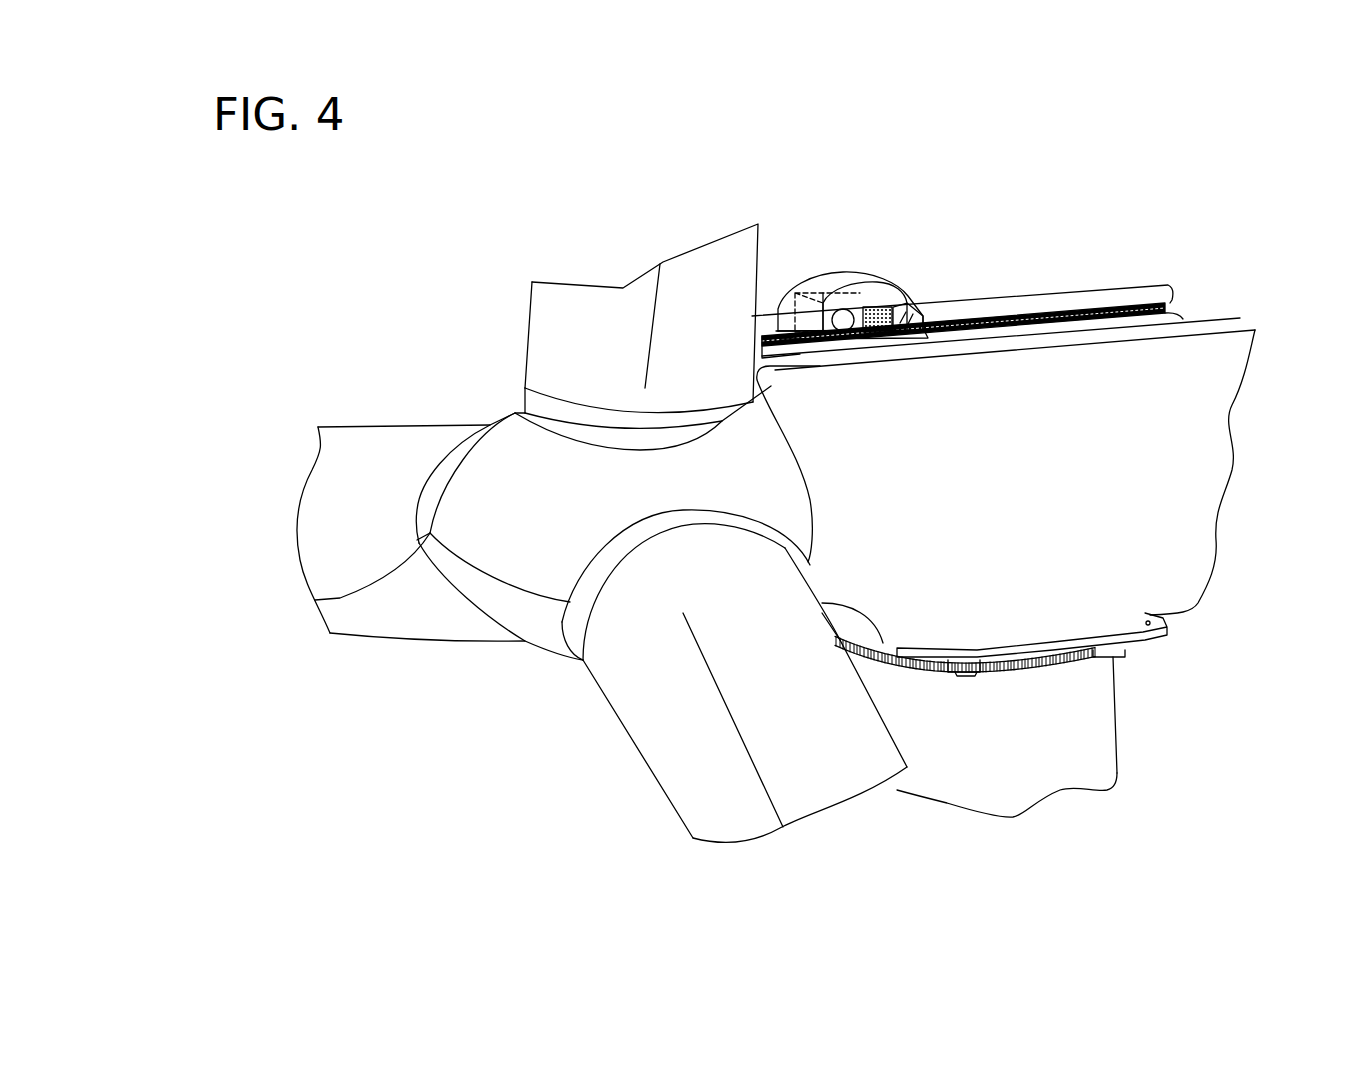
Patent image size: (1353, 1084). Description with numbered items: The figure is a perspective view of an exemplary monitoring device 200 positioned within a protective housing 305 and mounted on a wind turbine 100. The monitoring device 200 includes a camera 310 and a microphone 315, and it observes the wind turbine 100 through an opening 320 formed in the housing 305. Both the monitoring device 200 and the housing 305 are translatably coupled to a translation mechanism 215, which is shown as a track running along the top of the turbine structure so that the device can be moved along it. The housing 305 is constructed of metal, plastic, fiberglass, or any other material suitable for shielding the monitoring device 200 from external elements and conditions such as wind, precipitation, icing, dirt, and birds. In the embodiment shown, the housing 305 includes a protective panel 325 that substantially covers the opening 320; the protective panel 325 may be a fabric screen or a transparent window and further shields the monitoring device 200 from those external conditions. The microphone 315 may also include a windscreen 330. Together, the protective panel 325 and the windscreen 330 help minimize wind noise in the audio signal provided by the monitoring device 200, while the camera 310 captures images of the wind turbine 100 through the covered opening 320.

The wind turbine 100 is at (492, 723).
The monitoring device 200 is at (887, 319).
The translation mechanism 215 is at (1058, 332).
The protective housing 305 is at (843, 273).
The camera 310 is at (841, 327).
The microphone 315 is at (881, 348).
The opening 320 is at (912, 301).
The protective panel 325 is at (937, 328).
The windscreen 330 is at (898, 337).